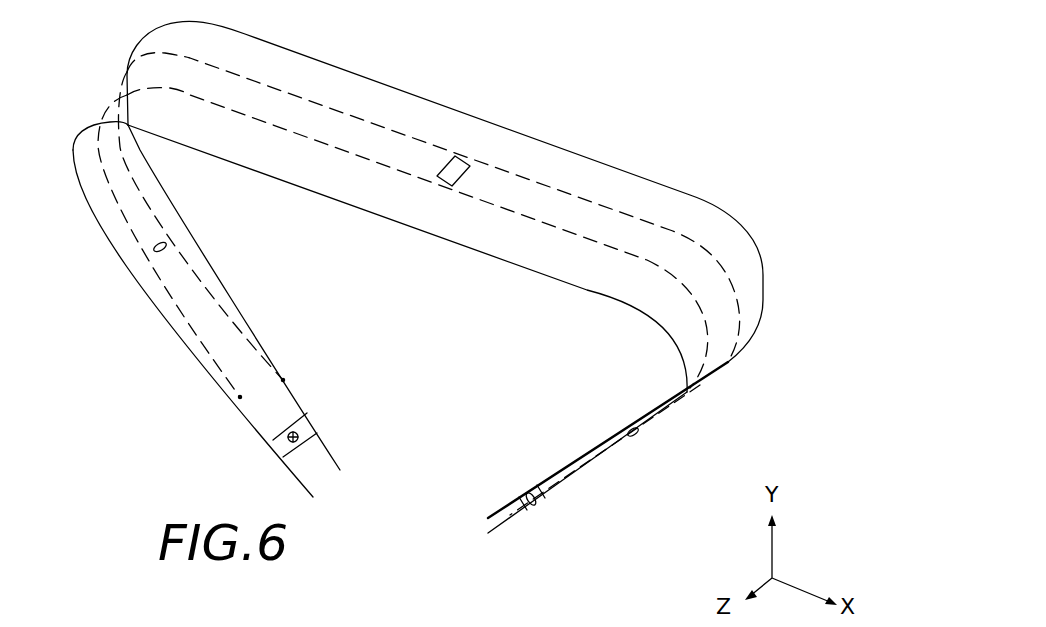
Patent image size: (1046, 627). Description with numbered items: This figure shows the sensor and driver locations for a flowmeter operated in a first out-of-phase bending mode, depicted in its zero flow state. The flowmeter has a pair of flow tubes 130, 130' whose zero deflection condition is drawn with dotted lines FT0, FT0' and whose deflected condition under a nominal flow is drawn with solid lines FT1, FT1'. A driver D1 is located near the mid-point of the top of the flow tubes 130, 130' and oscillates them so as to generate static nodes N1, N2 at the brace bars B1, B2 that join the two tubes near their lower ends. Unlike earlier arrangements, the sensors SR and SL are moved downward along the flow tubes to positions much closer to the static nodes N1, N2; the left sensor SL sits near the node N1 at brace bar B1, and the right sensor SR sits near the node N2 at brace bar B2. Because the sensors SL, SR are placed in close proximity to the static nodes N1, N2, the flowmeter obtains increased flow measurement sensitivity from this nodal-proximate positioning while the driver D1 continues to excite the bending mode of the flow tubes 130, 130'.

The flow tube 130 is at (212, 284).
The flow tube 130' is at (620, 297).
The nominal flow condition line FT1 is at (407, 258).
The nominal flow condition line FT1' is at (468, 191).
The zero deflection line FT0 is at (417, 209).
The zero deflection line FT0' is at (433, 200).
The driver D1 is at (465, 158).
The left sensor SL is at (160, 254).
The right sensor SR is at (640, 436).
The static node N1 is at (283, 452).
The static node N2 is at (529, 495).
The brace bar B1 is at (295, 452).
The brace bar B2 is at (538, 502).